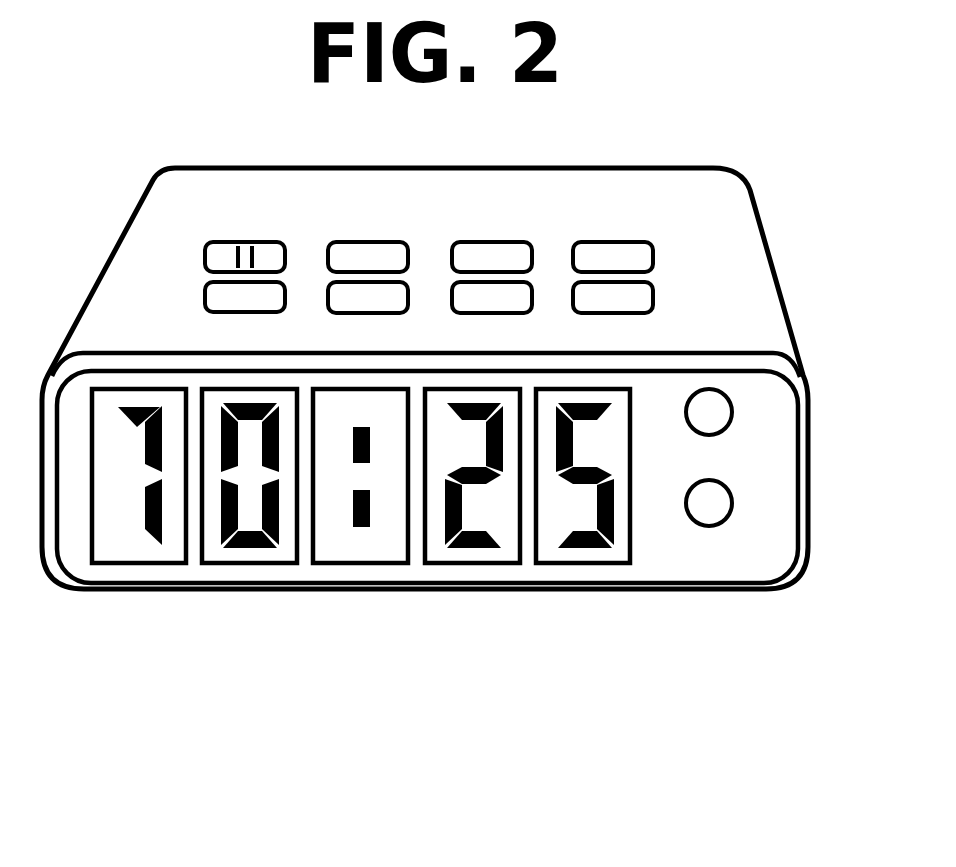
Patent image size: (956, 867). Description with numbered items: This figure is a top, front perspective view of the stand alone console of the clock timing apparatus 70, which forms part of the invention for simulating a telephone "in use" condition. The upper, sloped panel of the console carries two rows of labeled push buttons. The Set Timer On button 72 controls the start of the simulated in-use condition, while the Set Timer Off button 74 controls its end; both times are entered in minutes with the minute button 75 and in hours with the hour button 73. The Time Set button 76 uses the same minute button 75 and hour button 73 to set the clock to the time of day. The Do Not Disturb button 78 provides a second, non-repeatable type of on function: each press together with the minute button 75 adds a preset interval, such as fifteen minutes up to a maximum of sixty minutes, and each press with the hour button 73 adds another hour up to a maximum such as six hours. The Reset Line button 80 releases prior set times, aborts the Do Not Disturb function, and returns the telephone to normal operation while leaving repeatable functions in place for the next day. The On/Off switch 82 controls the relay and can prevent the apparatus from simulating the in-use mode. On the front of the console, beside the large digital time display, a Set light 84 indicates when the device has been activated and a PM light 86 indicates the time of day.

The clock timing apparatus 70 is at (322, 612).
The Set Timer On button 72 is at (532, 242).
The hour button 73 is at (532, 297).
The Set Timer Off button 74 is at (653, 257).
The minute button 75 is at (653, 297).
The Time Set button 76 is at (405, 242).
The Do Not Disturb button 78 is at (205, 297).
The Reset Line button 80 is at (408, 297).
The On/Off switch 82 is at (205, 257).
The Set light 84 is at (729, 400).
The PM light 86 is at (731, 499).